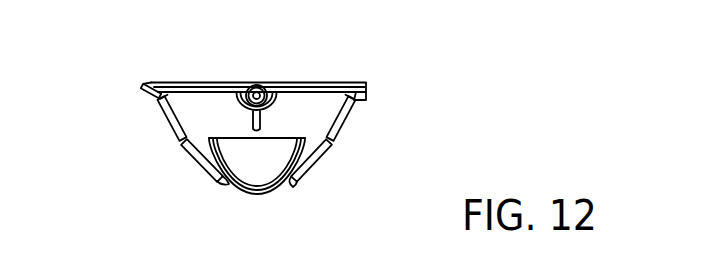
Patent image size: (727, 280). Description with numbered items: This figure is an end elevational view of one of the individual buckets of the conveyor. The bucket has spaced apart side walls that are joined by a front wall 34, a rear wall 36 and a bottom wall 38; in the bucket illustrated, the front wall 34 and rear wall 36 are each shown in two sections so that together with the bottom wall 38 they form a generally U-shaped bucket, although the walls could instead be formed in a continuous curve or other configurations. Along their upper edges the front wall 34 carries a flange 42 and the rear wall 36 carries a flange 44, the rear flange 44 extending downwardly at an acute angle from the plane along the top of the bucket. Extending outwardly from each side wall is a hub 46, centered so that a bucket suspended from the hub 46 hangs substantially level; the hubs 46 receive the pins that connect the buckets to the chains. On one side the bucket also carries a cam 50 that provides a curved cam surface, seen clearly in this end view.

The front wall 34 is at (342, 121).
The rear wall 36 is at (176, 137).
The bottom wall 38 is at (228, 184).
The flange 42 is at (367, 82).
The flange 44 is at (143, 85).
The hub 46 is at (258, 90).
The cam 50 is at (293, 187).